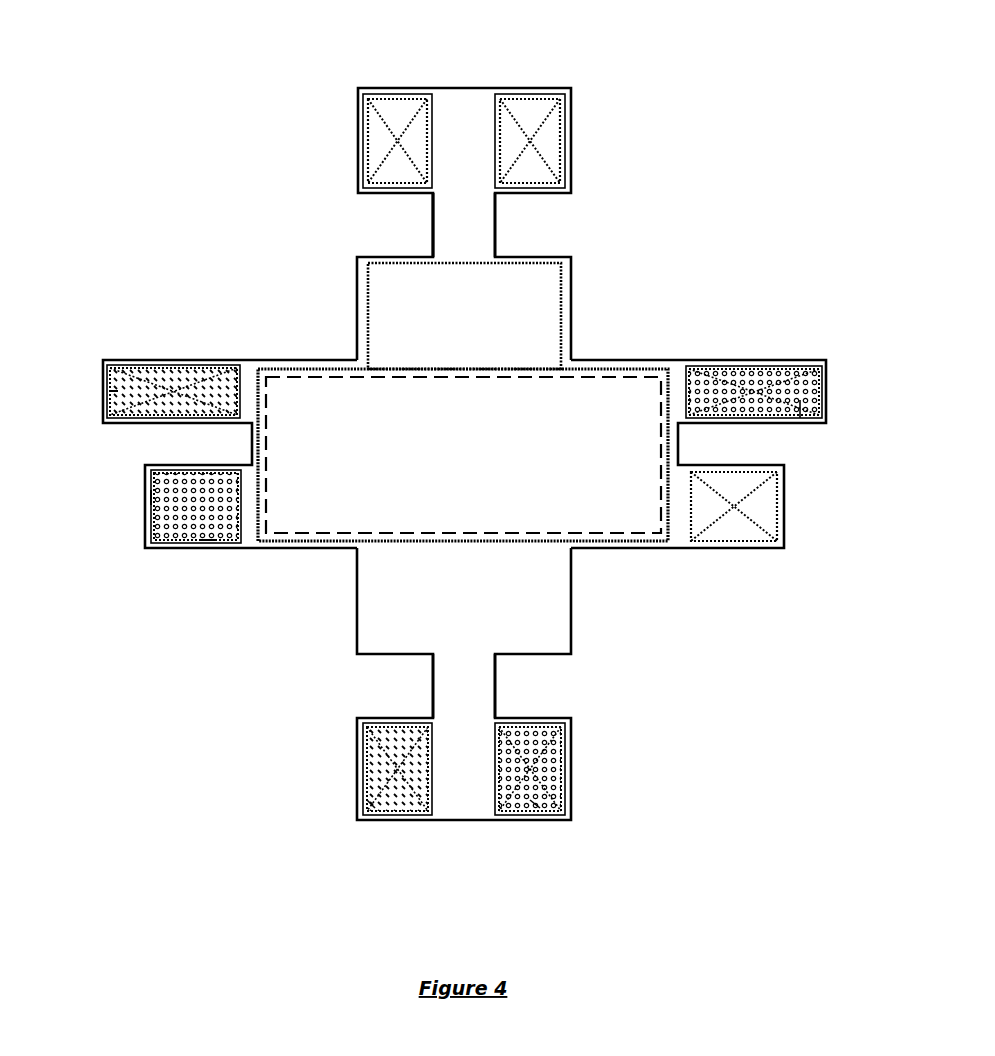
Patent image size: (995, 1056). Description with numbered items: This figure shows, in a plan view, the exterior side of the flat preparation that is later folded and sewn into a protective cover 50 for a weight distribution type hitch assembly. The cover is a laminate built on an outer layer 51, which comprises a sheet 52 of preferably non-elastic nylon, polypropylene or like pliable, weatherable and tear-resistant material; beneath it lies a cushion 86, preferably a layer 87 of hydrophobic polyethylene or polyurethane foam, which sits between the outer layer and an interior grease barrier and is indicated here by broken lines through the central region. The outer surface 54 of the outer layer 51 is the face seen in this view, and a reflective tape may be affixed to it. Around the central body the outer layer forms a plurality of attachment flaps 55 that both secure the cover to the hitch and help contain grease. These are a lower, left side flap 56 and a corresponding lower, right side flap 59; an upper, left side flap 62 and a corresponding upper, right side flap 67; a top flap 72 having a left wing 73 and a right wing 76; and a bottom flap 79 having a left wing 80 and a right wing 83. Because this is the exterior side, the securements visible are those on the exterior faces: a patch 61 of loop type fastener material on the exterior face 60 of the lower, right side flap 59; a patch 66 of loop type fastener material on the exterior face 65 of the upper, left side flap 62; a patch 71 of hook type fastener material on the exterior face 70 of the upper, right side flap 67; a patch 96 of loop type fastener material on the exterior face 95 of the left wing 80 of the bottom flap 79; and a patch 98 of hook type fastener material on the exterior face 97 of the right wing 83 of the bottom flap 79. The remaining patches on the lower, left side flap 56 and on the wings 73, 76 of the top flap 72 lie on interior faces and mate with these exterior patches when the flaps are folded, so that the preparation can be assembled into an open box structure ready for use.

The protective cover 50 is at (689, 205).
The outer layer 51 is at (465, 226).
The sheet 52 is at (480, 110).
The outer surface 54 is at (463, 455).
The attachment flaps 55 is at (240, 91).
The lower, left side flap 56 is at (720, 533).
The lower, right side flap 59 is at (150, 497).
The exterior face 60 is at (213, 472).
The patch 61 is at (207, 535).
The upper, left side flap 62 is at (800, 416).
The exterior face 65 is at (822, 383).
The patch 66 is at (782, 402).
The upper, right side flap 67 is at (133, 365).
The exterior face 70 is at (163, 375).
The patch 71 is at (108, 387).
The top flap 72 is at (455, 103).
The left wing 73 is at (568, 172).
The right wing 76 is at (360, 195).
The bottom flap 79 is at (463, 795).
The left wing 80 is at (560, 722).
The right wing 83 is at (365, 717).
The cushion 86 is at (575, 403).
The layer 87 is at (463, 437).
The exterior face 95 is at (557, 773).
The patch 96 is at (535, 800).
The exterior face 97 is at (405, 733).
The patch 98 is at (368, 805).